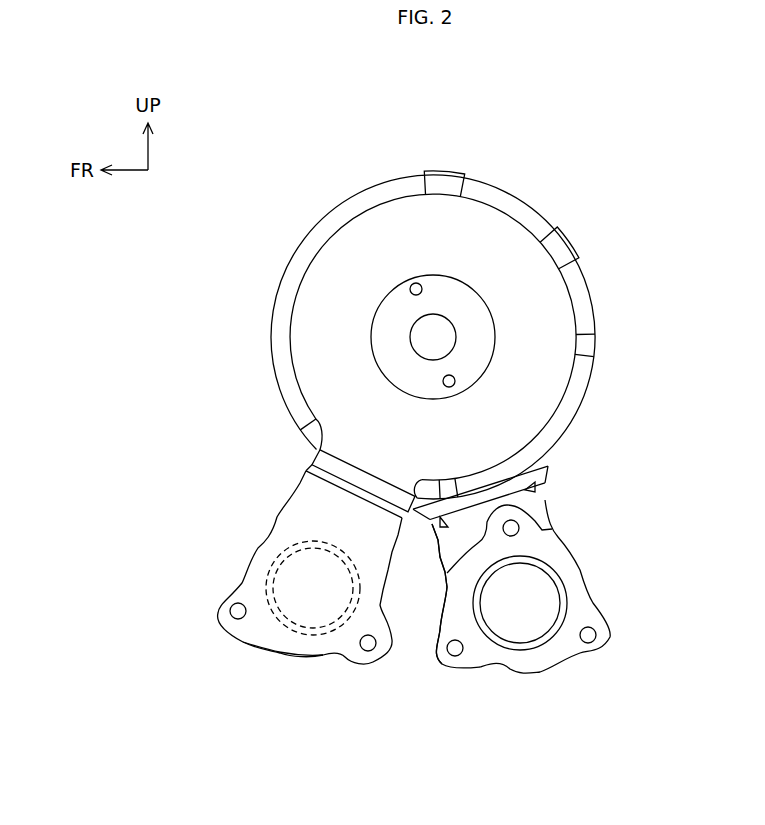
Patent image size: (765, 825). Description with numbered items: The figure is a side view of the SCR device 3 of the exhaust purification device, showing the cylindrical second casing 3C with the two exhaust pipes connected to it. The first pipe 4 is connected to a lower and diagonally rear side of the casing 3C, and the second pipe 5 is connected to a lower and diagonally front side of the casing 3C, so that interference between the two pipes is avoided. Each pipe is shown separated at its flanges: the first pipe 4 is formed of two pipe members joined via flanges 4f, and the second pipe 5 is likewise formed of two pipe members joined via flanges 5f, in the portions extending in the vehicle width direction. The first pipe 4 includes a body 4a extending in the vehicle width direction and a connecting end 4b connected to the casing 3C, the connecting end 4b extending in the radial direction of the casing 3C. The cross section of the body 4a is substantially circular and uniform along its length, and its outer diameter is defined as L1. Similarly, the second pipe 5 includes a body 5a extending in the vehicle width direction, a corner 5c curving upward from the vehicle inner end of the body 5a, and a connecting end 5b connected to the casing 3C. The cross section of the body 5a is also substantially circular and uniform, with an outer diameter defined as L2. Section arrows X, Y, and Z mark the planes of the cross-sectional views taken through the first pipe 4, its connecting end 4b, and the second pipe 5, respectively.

The SCR device 3 is at (258, 214).
The second casing 3C is at (593, 301).
The first pipe 4 is at (632, 545).
The body 4a is at (508, 650).
The connecting end 4b is at (545, 512).
The flanges 4f is at (440, 658).
The second pipe 5 is at (245, 512).
The body 5a is at (315, 628).
The connecting end 5b is at (307, 486).
The corner 5c is at (333, 622).
The flanges 5f is at (283, 656).
The arrows X- X is at (390, 160).
The arrows Y- Y is at (590, 489).
The arrows Z- Z is at (259, 692).
The outer diameter of the body of the first pipe L1 is at (530, 558).
The outer diameter of the body of the second pipe L2 is at (305, 635).